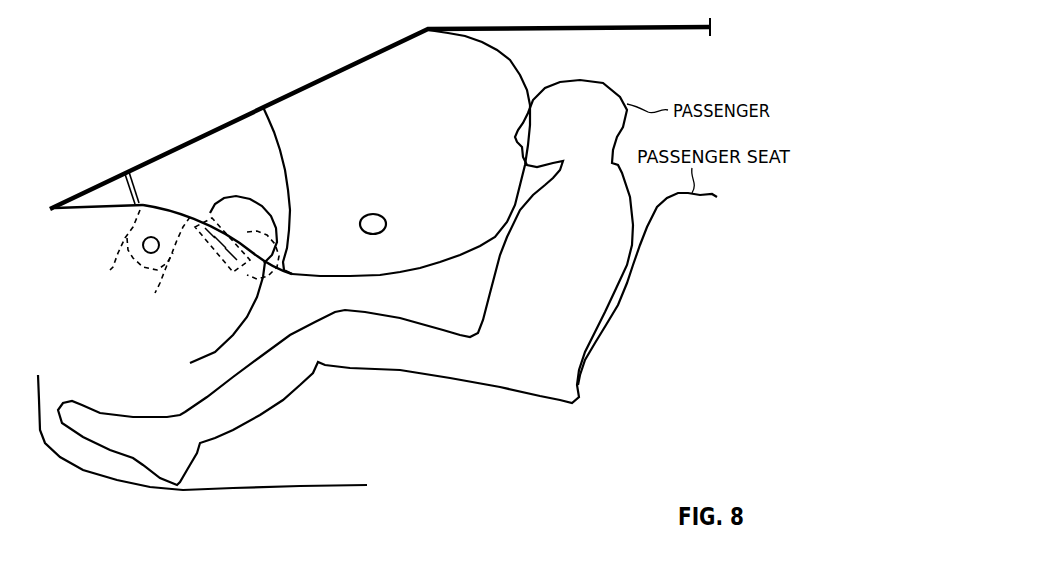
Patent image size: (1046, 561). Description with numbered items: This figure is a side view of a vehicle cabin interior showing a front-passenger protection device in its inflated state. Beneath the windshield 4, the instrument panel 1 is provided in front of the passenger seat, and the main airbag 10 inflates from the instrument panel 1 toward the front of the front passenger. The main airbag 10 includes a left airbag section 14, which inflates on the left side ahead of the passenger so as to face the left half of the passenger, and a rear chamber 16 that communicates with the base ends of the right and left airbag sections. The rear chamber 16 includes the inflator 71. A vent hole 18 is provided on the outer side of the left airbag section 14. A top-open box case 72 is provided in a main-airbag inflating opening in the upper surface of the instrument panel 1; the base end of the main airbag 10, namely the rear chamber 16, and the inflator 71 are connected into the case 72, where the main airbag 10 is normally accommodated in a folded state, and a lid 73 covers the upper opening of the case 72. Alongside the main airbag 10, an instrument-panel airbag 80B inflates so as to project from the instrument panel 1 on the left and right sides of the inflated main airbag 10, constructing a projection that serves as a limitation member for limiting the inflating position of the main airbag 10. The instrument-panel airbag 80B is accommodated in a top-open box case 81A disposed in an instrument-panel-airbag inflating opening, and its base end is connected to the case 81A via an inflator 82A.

The windshield 4 is at (366, 56).
The instrument panel 1 is at (100, 200).
The lid 73 is at (123, 206).
The case 72 is at (110, 267).
The inflator 71 is at (154, 294).
The rear chamber 16 is at (227, 158).
The main airbag 10 is at (516, 236).
The left airbag section 14 is at (509, 74).
The instrument-panel airbag 80B is at (247, 207).
The inflator 82A is at (285, 252).
The case 81A is at (323, 270).
The vent hole 18 is at (385, 214).